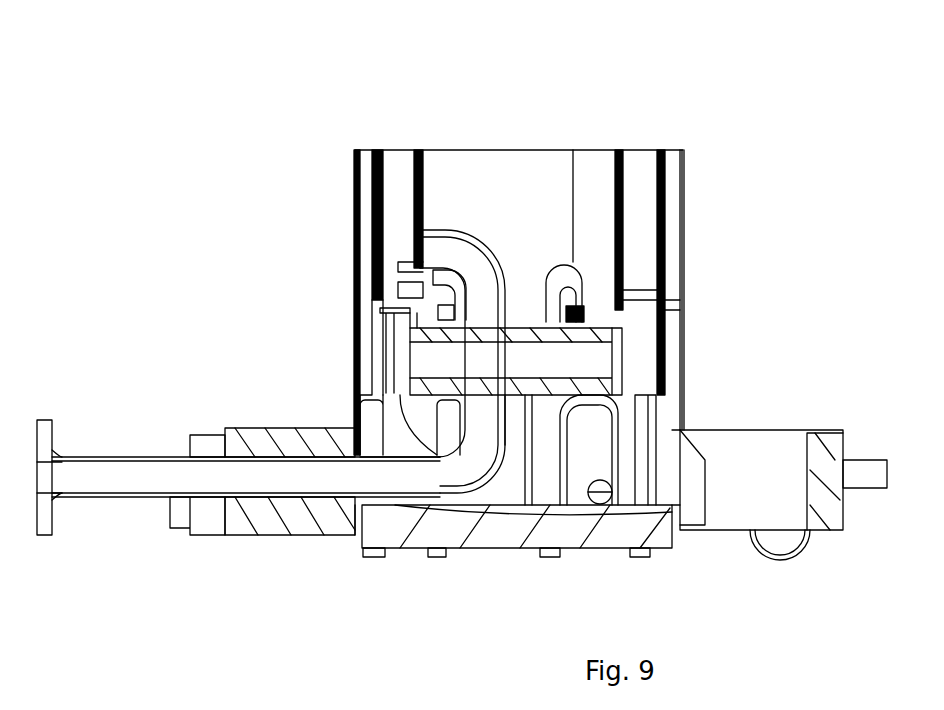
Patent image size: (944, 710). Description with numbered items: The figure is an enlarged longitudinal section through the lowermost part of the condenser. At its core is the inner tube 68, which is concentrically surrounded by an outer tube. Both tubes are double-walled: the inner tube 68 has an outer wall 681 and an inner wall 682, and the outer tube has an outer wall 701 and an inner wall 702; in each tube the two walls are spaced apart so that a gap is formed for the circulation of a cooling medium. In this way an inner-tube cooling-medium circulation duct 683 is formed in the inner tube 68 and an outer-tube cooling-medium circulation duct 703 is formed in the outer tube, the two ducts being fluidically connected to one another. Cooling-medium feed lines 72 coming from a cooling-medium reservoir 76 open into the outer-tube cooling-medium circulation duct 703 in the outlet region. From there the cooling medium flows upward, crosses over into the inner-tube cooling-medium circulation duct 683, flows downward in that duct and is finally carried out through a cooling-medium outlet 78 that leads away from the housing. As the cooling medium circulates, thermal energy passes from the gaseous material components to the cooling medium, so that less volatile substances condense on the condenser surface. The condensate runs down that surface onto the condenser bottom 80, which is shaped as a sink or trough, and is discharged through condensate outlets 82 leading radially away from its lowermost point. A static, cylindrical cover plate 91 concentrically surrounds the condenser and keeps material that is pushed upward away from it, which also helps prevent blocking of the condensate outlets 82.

The inner tube 68 is at (415, 212).
The outer wall 681 is at (357, 150).
The inner wall 682 is at (420, 180).
The inner-tube cooling-medium circulation duct 683 is at (415, 148).
The outer wall 701 is at (665, 185).
The inner wall 702 is at (655, 172).
The outer-tube cooling-medium circulation duct 703 is at (660, 150).
The static cover plate 91 is at (685, 265).
The cooling-medium feed lines 72 is at (410, 293).
The cooling-medium reservoir 76 is at (590, 370).
The cooling-medium outlet 78 is at (485, 345).
The condenser bottom 80 is at (483, 540).
The condensate outlets 82 is at (607, 480).